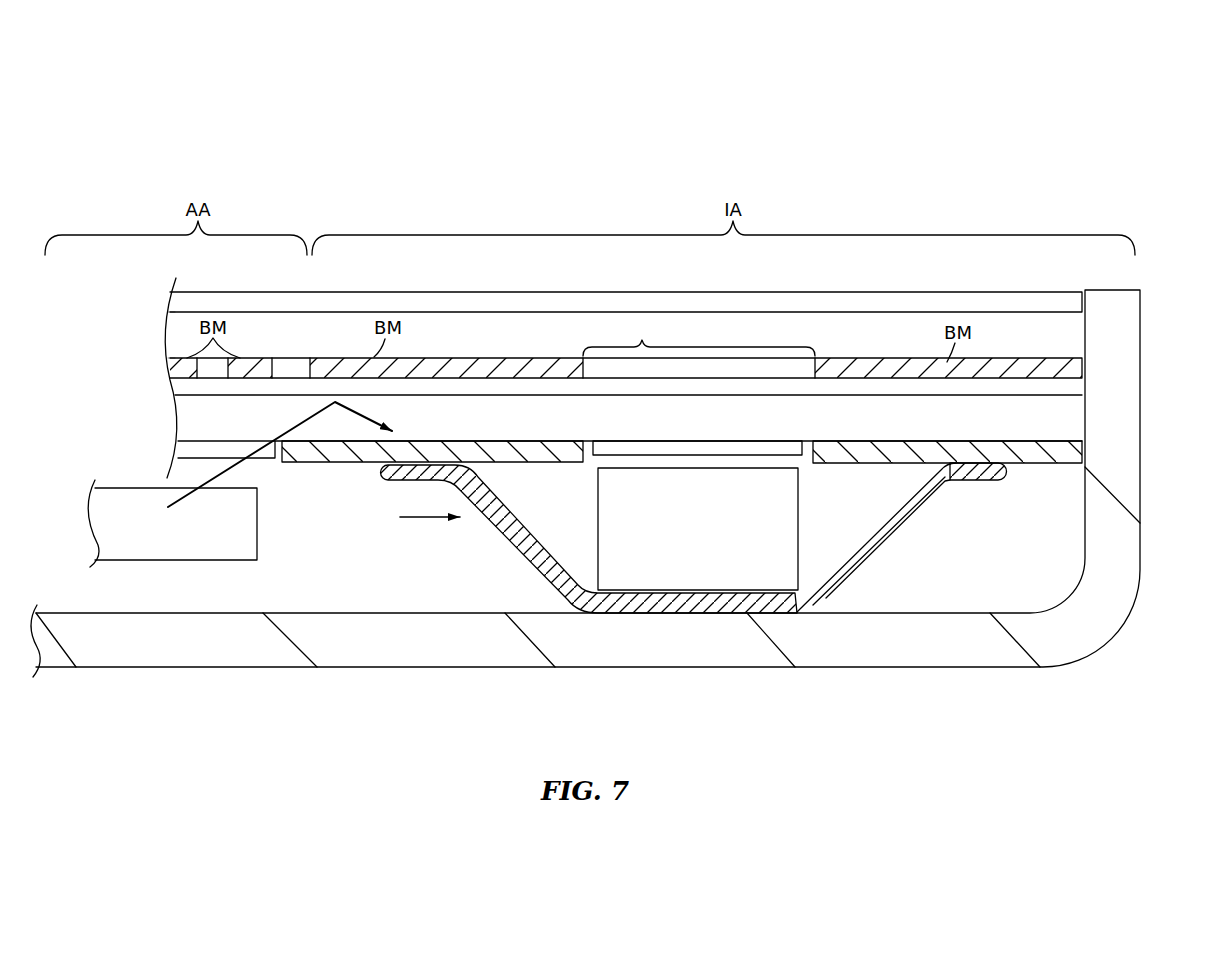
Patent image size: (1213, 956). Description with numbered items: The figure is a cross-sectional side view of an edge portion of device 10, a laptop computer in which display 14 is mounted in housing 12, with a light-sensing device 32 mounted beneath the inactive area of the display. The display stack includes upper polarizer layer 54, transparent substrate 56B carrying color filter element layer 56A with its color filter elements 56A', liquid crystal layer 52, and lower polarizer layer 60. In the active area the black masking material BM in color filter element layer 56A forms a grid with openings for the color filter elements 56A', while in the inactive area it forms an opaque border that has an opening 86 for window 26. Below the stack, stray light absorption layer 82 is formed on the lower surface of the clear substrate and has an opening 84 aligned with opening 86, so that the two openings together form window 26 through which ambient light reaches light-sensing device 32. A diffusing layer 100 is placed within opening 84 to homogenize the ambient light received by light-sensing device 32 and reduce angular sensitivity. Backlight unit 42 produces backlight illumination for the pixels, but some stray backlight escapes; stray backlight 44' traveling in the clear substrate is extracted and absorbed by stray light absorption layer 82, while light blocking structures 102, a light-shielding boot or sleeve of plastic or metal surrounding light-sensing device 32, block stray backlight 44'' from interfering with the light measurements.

The device 10 is at (1160, 110).
The housing 12 is at (367, 658).
The display 14 is at (562, 203).
The window 26 is at (719, 336).
The light-sensing device 32 is at (778, 561).
The backlight unit 42 is at (198, 549).
The stray backlight 44' is at (280, 454).
The stray backlight 44'' is at (430, 545).
The liquid crystal layer 52 is at (220, 389).
The upper polarizer layer 54 is at (203, 298).
The color filter element layer 56A is at (575, 374).
The color filter elements 56A' is at (186, 390).
The transparent substrate 56B is at (176, 336).
The lower polarizer layer 60 is at (185, 449).
The stray light absorption layer 82 is at (323, 463).
The opening 84 is at (809, 471).
The opening 86 is at (699, 337).
The diffusing layer 100 is at (603, 452).
The light blocking structures 102 is at (527, 546).